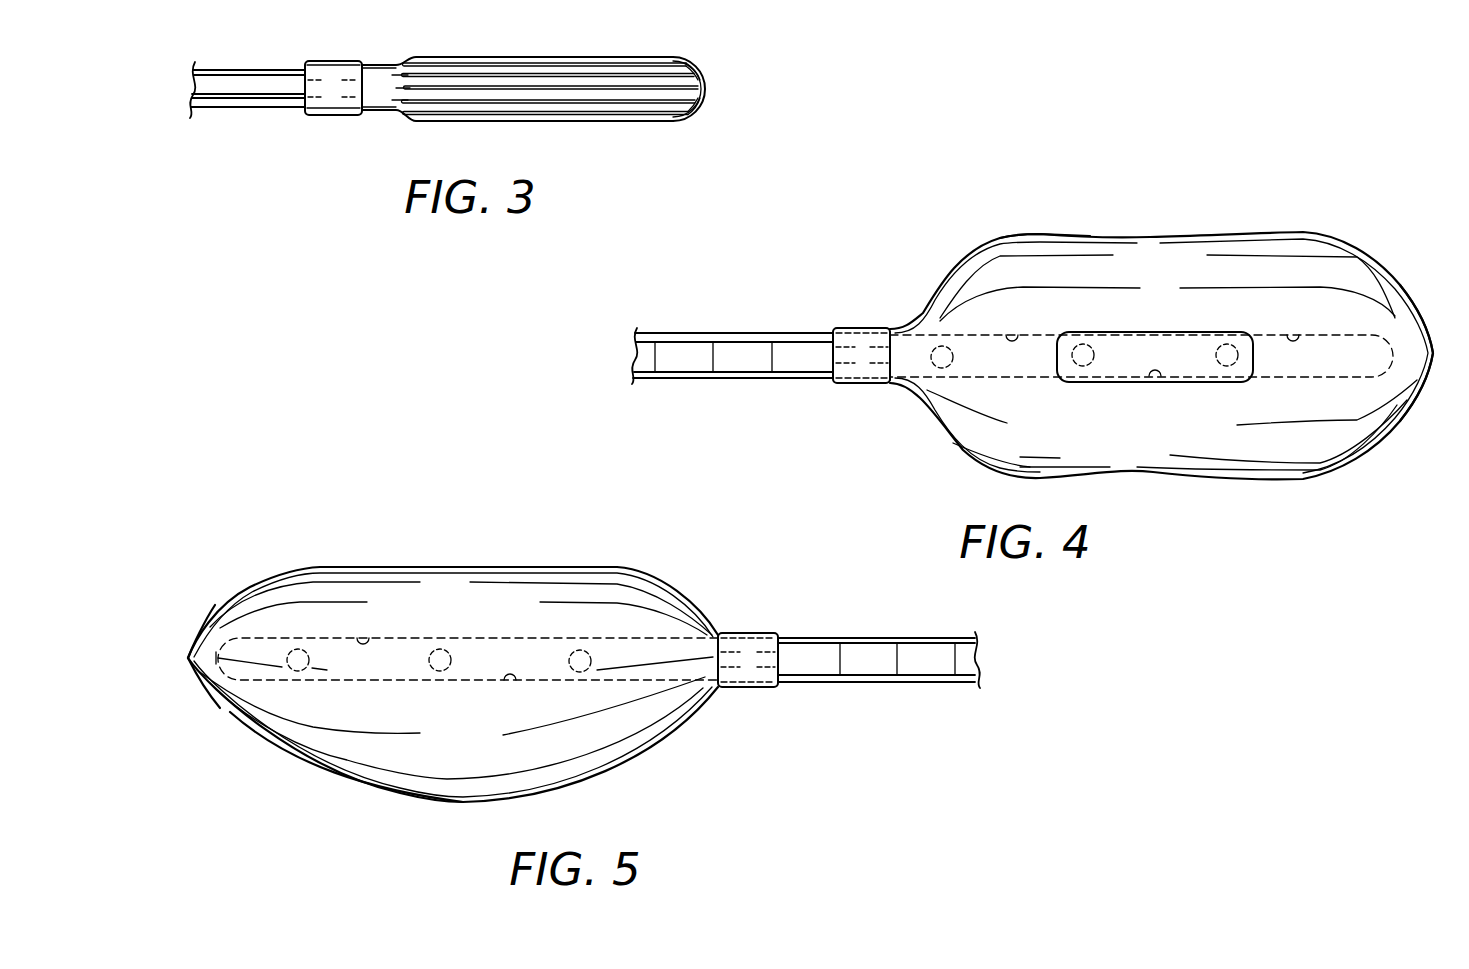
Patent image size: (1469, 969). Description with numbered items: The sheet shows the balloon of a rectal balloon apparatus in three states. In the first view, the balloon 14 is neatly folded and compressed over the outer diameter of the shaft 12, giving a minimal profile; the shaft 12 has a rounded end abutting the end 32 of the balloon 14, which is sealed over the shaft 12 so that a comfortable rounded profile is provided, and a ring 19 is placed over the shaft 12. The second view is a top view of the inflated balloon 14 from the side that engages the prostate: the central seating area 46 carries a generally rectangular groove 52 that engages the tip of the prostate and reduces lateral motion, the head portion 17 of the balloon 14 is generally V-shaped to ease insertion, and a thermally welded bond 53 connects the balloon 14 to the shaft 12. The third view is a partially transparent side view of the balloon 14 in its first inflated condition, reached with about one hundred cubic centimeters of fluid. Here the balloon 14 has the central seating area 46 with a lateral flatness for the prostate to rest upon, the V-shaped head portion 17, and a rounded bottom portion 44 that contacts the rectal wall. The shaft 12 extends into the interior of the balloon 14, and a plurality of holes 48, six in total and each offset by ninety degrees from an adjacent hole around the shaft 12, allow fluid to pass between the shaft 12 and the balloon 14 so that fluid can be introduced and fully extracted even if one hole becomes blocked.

In FIG. 3, the shaft 12 is at (272, 69).
In FIG. 4, the shaft 12 is at (753, 334).
In FIG. 5, the shaft 12 is at (448, 637).
In FIG. 3, the balloon 14 is at (535, 55).
In FIG. 4, the balloon 14 is at (1218, 233).
In FIG. 5, the balloon 14 is at (632, 567).
In FIG. 4, the head portion 17 is at (1405, 300).
In FIG. 5, the head portion 17 is at (210, 620).
In FIG. 3, the ring 19 is at (330, 113).
In FIG. 4, the ring 19 is at (860, 329).
In FIG. 5, the ring 19 is at (748, 633).
In FIG. 3, the end of the balloon 32 is at (704, 92).
In FIG. 5, the bottom portion 44 is at (295, 758).
In FIG. 4, the central seating area 46 is at (1030, 243).
In FIG. 5, the central seating area 46 is at (412, 567).
In FIG. 5, the holes 48 is at (440, 670).
In FIG. 4, the groove 52 is at (1118, 382).
In FIG. 4, the thermally welded bond 53 is at (890, 367).